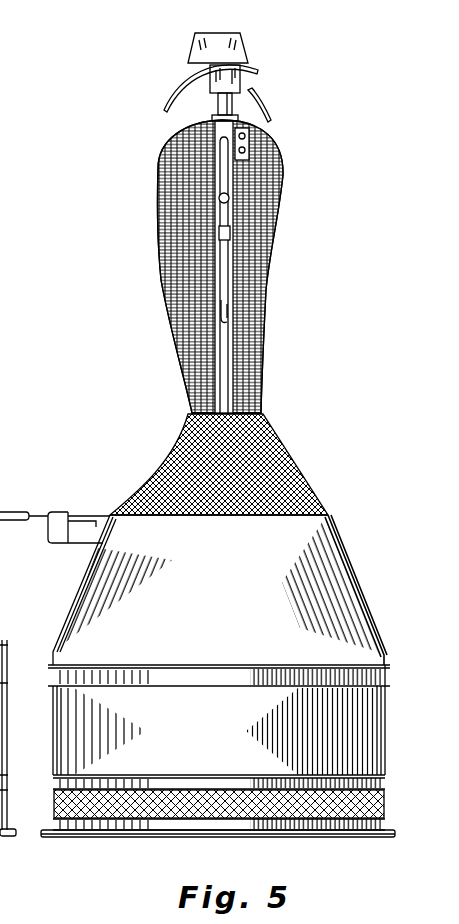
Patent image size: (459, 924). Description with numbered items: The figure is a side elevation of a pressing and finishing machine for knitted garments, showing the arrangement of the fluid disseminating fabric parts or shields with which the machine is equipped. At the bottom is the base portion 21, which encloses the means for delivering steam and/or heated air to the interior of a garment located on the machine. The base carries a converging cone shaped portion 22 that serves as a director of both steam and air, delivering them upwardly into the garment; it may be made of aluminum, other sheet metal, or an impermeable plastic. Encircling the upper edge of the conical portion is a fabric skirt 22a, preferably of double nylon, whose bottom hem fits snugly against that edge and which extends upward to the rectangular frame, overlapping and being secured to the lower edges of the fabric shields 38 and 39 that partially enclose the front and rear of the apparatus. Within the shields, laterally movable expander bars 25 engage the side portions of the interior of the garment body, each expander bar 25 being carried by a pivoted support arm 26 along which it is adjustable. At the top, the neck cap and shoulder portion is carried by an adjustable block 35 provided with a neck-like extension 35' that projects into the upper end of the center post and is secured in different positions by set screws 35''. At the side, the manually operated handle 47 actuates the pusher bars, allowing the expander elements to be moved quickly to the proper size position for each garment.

The base portion 21 is at (54, 710).
The cone shaped portion 22 is at (80, 588).
The fabric skirt 22a is at (306, 481).
The expander bar 25 is at (224, 317).
The support arm 26 is at (222, 372).
The adjustable block 35 is at (228, 77).
The neck-like extension 35' is at (205, 107).
The set screws 35'' is at (273, 144).
The fabric shield 38 is at (166, 318).
The fabric shield 39 is at (263, 299).
The handle 47 is at (25, 511).